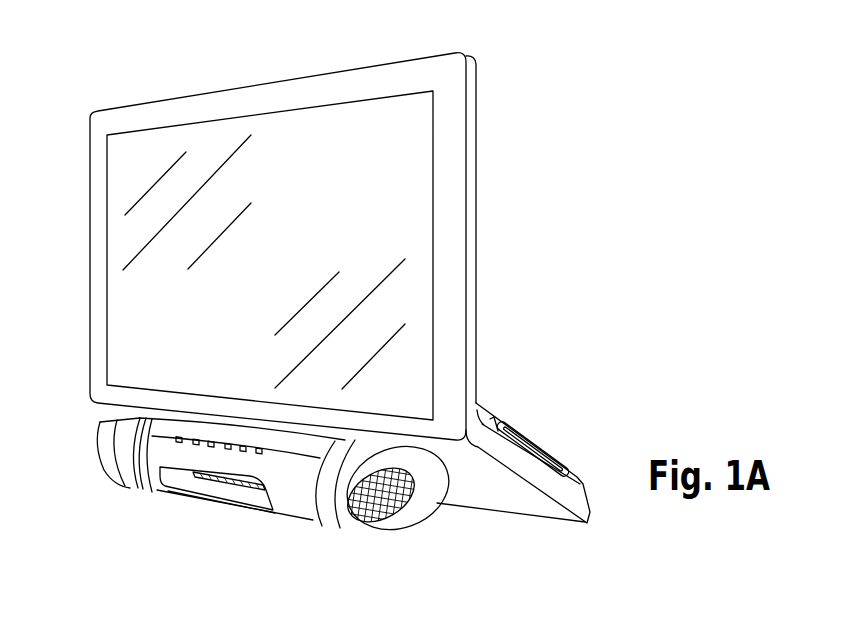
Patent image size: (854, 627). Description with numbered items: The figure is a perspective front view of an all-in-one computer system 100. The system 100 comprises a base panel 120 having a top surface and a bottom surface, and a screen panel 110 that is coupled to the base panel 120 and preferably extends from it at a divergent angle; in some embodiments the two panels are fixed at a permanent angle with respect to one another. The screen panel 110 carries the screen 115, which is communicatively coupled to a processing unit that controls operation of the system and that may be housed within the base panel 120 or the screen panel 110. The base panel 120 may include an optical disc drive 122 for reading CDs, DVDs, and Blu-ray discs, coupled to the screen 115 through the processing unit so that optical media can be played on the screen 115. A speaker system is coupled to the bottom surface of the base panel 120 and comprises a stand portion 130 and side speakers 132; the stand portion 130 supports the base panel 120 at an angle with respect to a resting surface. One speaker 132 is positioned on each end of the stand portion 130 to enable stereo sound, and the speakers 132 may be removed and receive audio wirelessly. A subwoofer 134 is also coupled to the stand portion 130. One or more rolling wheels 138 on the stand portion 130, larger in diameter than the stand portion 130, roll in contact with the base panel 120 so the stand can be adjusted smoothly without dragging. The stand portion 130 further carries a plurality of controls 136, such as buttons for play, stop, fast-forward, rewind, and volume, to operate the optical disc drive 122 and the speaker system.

The AIO computer system 100 is at (602, 114).
The screen panel 110 is at (170, 107).
The screen 115 is at (369, 218).
The base panel 120 is at (553, 512).
The optical disc drive 122 is at (573, 477).
The stand portion 130 is at (293, 510).
The side speaker 132 is at (102, 458).
The subwoofer 134 is at (213, 473).
The plurality of controls 136 is at (153, 493).
The rolling wheel 138 is at (133, 490).